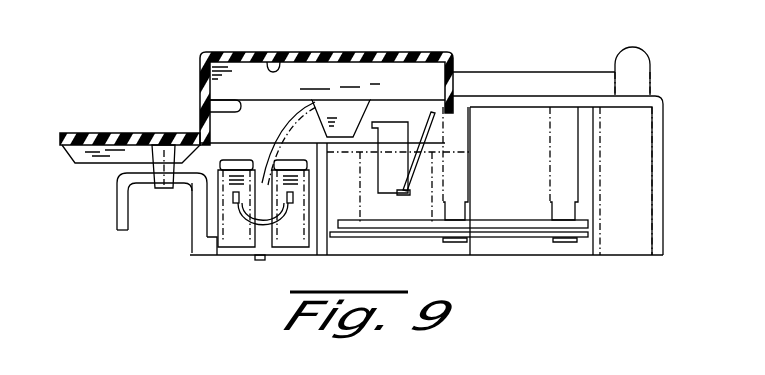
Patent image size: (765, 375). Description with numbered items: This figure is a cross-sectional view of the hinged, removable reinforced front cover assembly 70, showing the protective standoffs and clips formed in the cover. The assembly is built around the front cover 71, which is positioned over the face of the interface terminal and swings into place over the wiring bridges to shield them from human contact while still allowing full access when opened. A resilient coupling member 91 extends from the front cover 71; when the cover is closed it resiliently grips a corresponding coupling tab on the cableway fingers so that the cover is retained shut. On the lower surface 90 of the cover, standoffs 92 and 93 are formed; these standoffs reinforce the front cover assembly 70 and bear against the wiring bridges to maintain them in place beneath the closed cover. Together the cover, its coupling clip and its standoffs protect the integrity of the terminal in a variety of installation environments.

The hinged reinforced front cover assembly 70 is at (463, 25).
The front cover 71 is at (207, 52).
The lower surface 90 is at (287, 62).
The resilient coupling member 91 is at (163, 189).
The standoff 92 is at (70, 150).
The standoff 93 is at (210, 106).